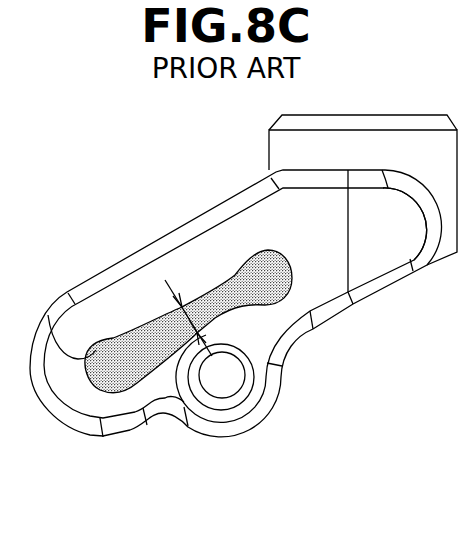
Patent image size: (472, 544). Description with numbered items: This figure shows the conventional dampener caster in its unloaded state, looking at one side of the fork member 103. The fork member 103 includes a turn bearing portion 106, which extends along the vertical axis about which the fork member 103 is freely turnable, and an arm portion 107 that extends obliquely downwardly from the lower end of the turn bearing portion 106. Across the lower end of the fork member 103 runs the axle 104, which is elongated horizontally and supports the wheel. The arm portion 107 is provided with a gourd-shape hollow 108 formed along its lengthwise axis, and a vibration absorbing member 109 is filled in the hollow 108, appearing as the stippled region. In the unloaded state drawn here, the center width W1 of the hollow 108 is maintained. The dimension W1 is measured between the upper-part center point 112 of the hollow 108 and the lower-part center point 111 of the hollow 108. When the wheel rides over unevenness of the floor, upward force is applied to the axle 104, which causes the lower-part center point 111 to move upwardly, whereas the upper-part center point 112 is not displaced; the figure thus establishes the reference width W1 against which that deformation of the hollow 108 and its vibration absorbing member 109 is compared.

The fork member 103 is at (123, 200).
The axle 104 is at (226, 382).
The turn bearing portion 106 is at (408, 147).
The arm portion 107 is at (372, 258).
The gourd-shape hollow 108 is at (48, 315).
The vibration absorbing member 109 is at (110, 386).
The lower-part center point 111 is at (197, 334).
The upper-part center point 112 is at (178, 308).
The center width of the hollow W1 is at (165, 280).